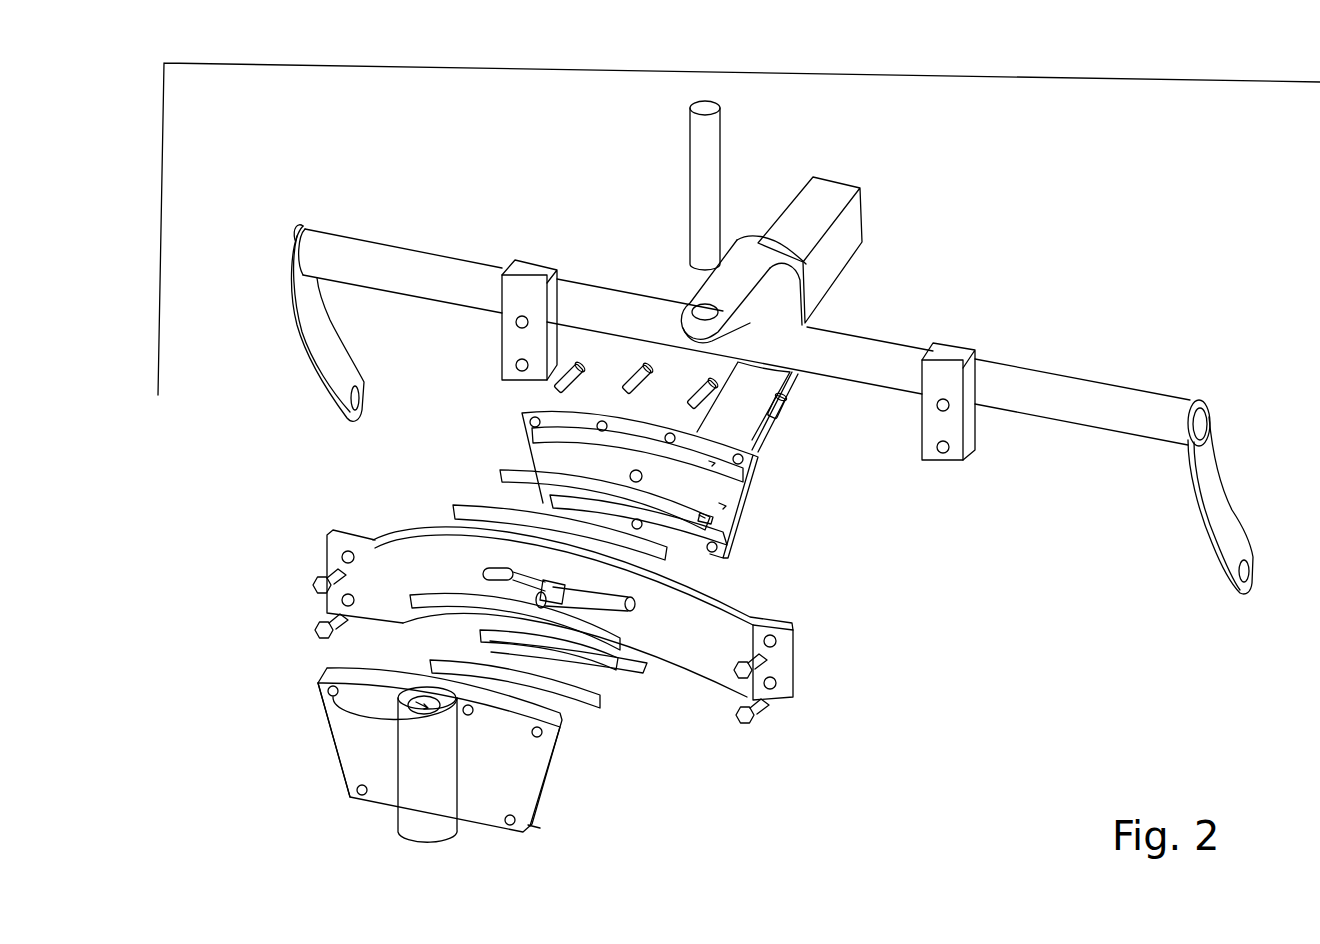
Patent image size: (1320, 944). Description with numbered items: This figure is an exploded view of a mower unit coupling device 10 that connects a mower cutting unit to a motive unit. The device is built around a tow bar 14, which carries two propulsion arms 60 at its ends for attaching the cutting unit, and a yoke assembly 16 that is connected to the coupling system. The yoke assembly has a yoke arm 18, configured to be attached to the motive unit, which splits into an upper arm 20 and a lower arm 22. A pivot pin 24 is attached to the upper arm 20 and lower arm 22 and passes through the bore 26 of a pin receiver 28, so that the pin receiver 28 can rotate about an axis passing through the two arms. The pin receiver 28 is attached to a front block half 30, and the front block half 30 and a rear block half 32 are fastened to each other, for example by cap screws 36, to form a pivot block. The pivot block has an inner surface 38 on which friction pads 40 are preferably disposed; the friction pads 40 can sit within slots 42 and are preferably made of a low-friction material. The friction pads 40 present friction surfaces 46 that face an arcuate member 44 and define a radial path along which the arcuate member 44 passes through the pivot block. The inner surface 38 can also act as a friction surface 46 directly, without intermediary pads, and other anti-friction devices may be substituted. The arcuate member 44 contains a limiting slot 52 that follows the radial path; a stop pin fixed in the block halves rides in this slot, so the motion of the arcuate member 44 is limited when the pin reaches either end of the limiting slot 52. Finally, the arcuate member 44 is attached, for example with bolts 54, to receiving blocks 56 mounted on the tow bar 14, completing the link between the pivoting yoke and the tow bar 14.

The mower unit coupling device 10 is at (702, 67).
The tow bar 14 is at (1053, 395).
The yoke assembly 16 is at (770, 244).
The yoke arm 18 is at (833, 265).
The upper arm 20 is at (720, 289).
The lower arm 22 is at (745, 432).
The pivot pin 24 is at (697, 170).
The bore 26 is at (320, 700).
The pin receiver 28 is at (412, 818).
The front block half 30 is at (352, 755).
The rear block half 32 is at (740, 549).
The cap screws 36 is at (640, 374).
The inner surface 38 is at (727, 505).
The friction pads 40 is at (457, 504).
The slots 42 is at (745, 474).
The arcuate member 44 is at (785, 662).
The friction surfaces 46 is at (720, 524).
The limiting slot 52 is at (487, 574).
The bolts 54 is at (322, 626).
The receiving blocks 56 is at (505, 348).
The propulsion arms 60 is at (343, 378).